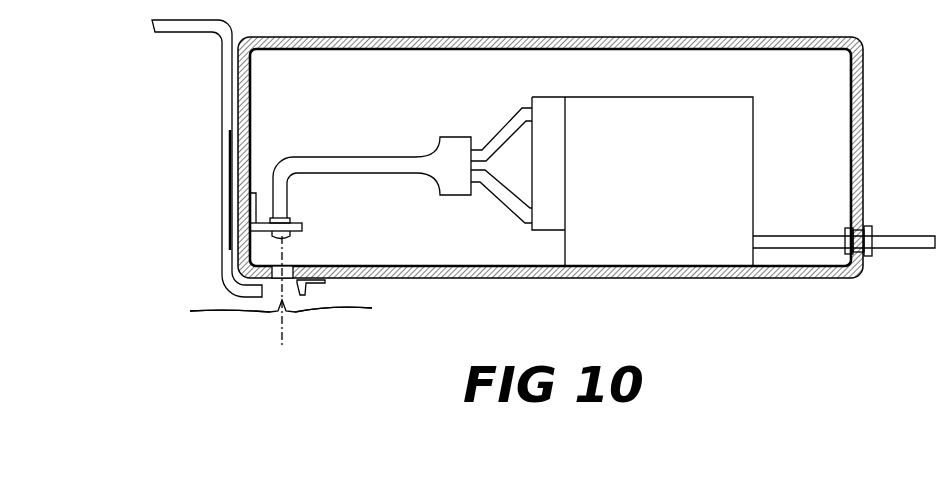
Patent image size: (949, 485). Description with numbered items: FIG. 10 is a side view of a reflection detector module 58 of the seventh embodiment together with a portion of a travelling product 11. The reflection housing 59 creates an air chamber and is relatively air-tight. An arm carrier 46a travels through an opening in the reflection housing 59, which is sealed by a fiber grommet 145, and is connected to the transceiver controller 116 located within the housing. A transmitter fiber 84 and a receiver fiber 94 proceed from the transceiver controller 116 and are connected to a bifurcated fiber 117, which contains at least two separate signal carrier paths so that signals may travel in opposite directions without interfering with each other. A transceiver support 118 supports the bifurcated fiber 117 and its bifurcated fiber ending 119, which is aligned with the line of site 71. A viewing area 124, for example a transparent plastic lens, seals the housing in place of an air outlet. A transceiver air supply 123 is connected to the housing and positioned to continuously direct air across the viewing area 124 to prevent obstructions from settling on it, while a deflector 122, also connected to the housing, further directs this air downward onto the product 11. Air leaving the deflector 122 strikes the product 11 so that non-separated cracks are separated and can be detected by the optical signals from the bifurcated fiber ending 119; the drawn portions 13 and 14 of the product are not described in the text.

The reflection detector module 58 is at (550, 142).
The reflection housing 59 is at (608, 37).
The transceiver controller 116 is at (645, 108).
The transmitter fiber 84 is at (503, 130).
The receiver fiber 94 is at (497, 193).
The bifurcated fiber 117 is at (347, 162).
The transceiver support 118 is at (252, 213).
The bifurcated fiber ending 119 is at (302, 227).
The transceiver air supply 123 is at (222, 110).
The viewing area 124 is at (292, 267).
The deflector 122 is at (302, 288).
The travelling product 11 is at (338, 311).
The panel portion 13 is at (293, 313).
The panel portion 14 is at (270, 313).
The line of site 71 is at (283, 335).
The fiber grommet 145 is at (849, 228).
The arm carrier 46a is at (902, 246).